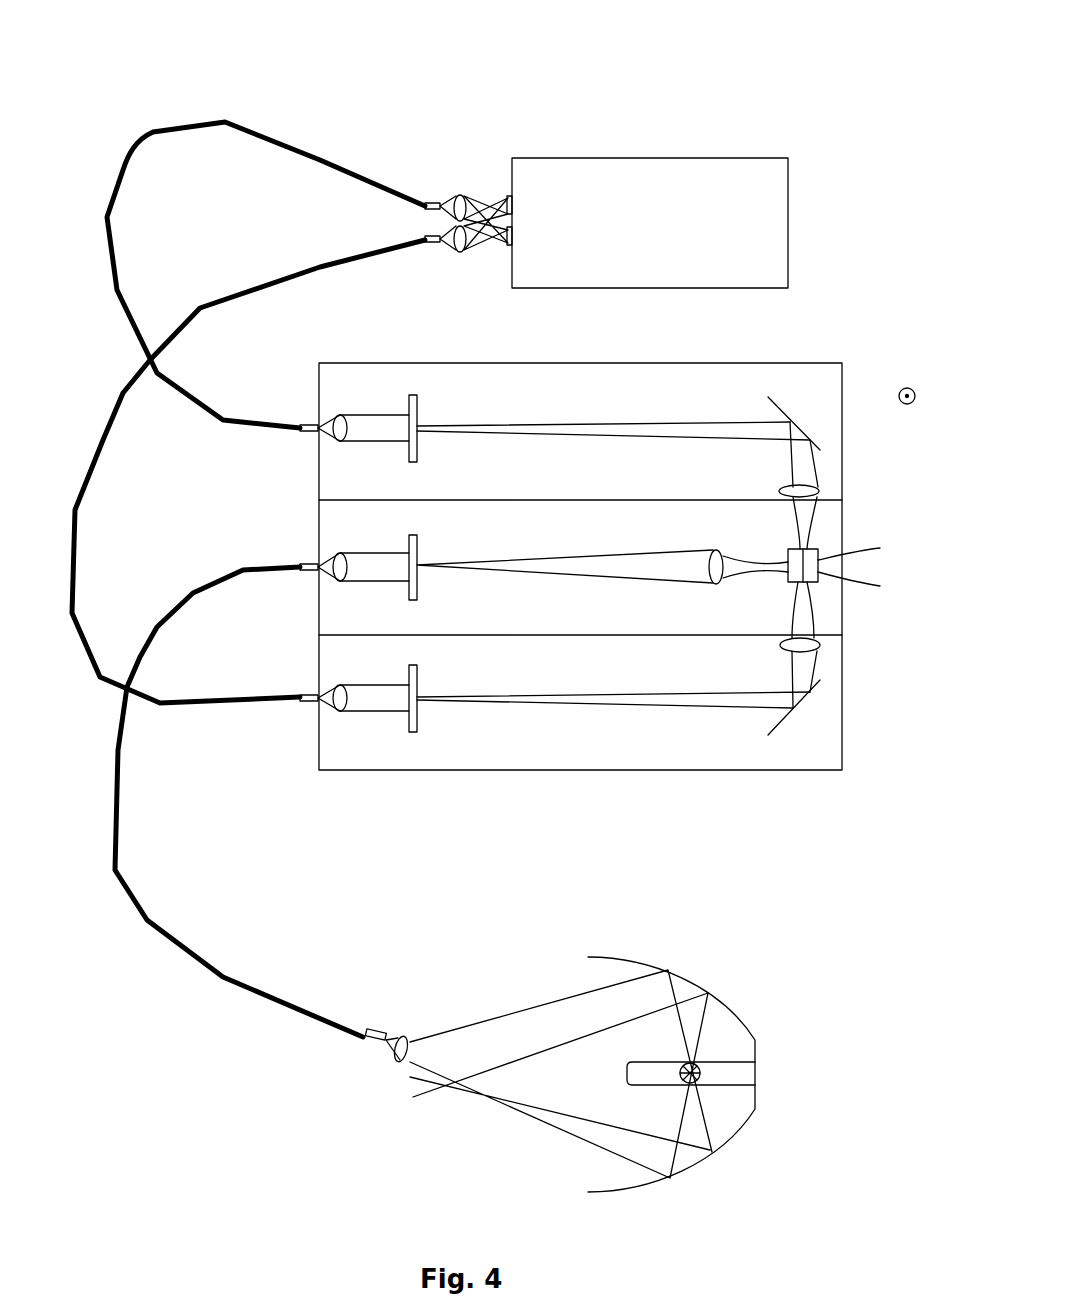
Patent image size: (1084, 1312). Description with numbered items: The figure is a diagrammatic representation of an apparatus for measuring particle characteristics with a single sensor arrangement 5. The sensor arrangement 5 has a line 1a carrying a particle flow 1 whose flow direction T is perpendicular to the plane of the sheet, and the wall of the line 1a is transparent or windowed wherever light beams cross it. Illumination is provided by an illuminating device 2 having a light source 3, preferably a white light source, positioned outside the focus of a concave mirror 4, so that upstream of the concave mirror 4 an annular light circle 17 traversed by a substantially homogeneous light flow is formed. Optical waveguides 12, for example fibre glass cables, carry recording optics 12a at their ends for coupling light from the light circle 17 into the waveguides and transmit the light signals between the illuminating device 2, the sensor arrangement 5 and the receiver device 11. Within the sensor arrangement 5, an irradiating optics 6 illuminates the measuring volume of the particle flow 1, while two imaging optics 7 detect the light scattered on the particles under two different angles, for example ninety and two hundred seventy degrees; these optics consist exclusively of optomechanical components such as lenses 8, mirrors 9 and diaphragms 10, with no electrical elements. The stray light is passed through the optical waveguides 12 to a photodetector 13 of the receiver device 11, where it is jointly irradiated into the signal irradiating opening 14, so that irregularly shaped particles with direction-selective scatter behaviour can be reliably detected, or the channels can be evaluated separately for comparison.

The particle flow 1 is at (818, 548).
The line 1a is at (818, 588).
The illuminating device 2 is at (760, 1149).
The light source 3 is at (706, 1070).
The concave mirror 4 is at (633, 955).
The sensor arrangement 5 is at (791, 806).
The irradiating optics 6 is at (508, 528).
The imaging optics 7 is at (640, 400).
The lens 8 is at (725, 540).
The mirror 9 is at (790, 400).
The diaphragm 10 is at (428, 412).
The receiver device 11 is at (780, 110).
The optical waveguide 12 is at (296, 136).
The recording optics 12a is at (408, 1035).
The photodetector 13 is at (668, 157).
The signal irradiating opening 14 is at (520, 217).
The light circle 17 is at (688, 977).
The flow direction T is at (919, 399).